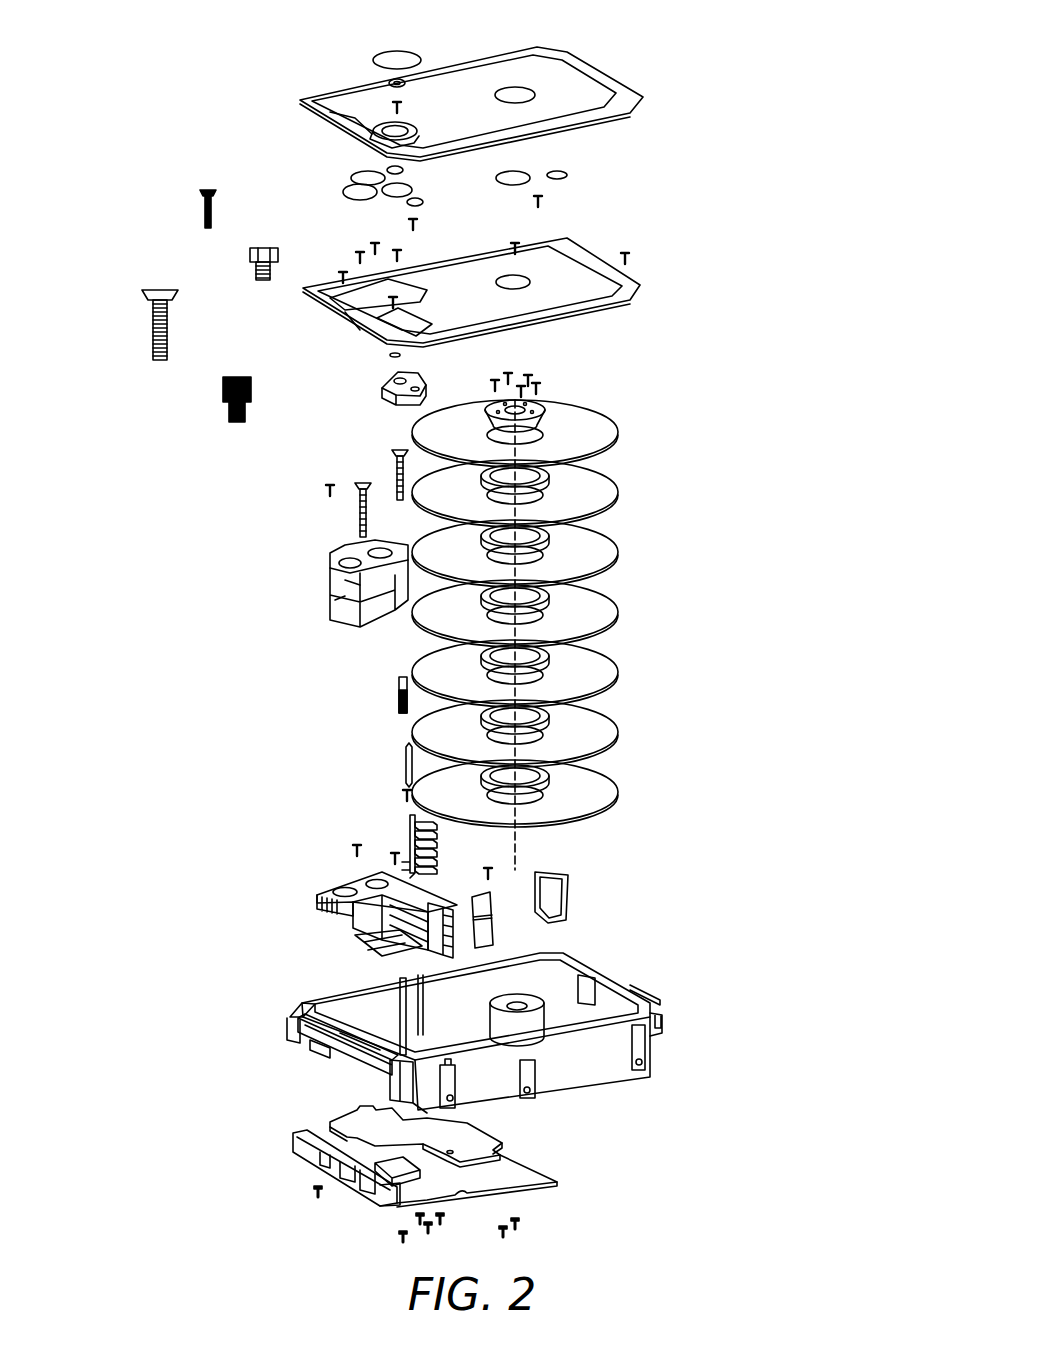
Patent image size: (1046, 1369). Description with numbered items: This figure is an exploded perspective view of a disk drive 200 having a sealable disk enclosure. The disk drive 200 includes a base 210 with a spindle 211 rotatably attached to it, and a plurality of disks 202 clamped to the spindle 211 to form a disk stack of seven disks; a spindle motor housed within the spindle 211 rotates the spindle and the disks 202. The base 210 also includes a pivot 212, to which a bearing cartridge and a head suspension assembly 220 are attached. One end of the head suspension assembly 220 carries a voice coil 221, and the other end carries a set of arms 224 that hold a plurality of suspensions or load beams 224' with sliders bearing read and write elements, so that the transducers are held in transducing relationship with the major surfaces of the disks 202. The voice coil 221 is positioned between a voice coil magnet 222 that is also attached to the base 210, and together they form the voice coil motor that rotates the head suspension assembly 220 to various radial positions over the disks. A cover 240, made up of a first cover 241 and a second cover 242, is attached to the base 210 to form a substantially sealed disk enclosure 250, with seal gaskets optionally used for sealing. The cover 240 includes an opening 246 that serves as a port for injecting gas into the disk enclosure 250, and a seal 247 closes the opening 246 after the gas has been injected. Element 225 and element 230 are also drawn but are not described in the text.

The disk drive 200 is at (688, 80).
The cover 240 is at (691, 172).
The second cover 242 is at (592, 83).
The seal 247 is at (398, 50).
The opening 246 is at (302, 109).
The first cover 241 is at (566, 272).
The plurality of disks 202 is at (668, 403).
The voice coil magnet 222 is at (325, 570).
The suspensions or load beams 224' is at (449, 881).
The head suspension assembly 220 is at (362, 919).
The voice coil 221 is at (330, 893).
The actuator tab 225 is at (375, 945).
The base 210 is at (603, 1080).
The disk enclosure 250 is at (548, 963).
The spindle 211 is at (532, 1000).
The pivot 212 is at (345, 1030).
The set of arms 224 is at (262, 1010).
The printed circuit board 230 is at (468, 1195).